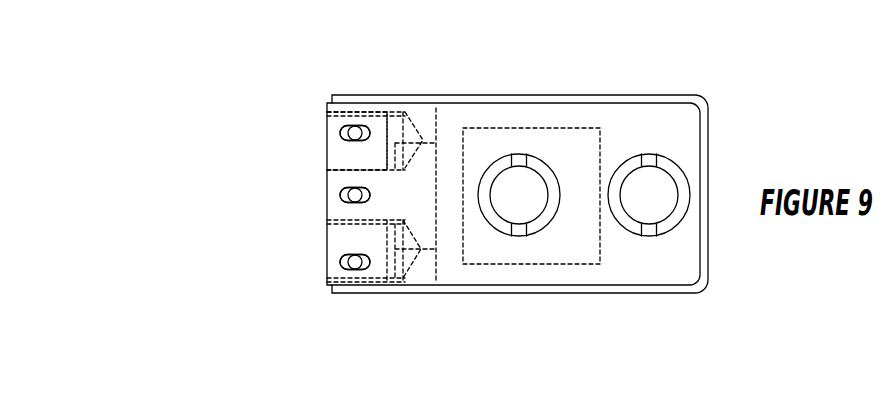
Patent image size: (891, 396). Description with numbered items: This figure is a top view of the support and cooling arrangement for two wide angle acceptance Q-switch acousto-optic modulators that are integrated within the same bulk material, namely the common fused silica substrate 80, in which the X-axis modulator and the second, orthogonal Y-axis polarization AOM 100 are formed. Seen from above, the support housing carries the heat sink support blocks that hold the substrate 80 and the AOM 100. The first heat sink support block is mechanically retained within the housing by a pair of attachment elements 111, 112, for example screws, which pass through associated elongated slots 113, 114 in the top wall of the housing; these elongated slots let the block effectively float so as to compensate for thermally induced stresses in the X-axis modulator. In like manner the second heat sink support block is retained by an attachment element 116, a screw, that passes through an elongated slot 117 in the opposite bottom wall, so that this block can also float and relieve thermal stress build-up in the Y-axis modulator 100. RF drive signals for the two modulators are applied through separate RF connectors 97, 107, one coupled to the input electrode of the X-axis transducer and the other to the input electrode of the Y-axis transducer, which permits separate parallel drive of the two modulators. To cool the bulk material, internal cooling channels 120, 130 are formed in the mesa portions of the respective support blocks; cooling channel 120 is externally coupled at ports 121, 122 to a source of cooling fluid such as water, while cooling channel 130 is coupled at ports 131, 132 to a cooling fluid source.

The common fused silica substrate 80 is at (517, 222).
The second AOM 100 is at (528, 263).
The RF connector 97 is at (532, 183).
The RF connector 107 is at (652, 175).
The attachment element 111 is at (354, 133).
The attachment element 112 is at (358, 267).
The elongated slot 113 is at (340, 133).
The elongated slot 114 is at (342, 261).
The attachment element 116 is at (356, 197).
The elongated slot 117 is at (340, 198).
The cooling channel 120 is at (433, 160).
The cooling channel 130 is at (424, 152).
The port 121 is at (323, 111).
The port 131 is at (335, 122).
The port 122 is at (309, 251).
The port 132 is at (337, 238).